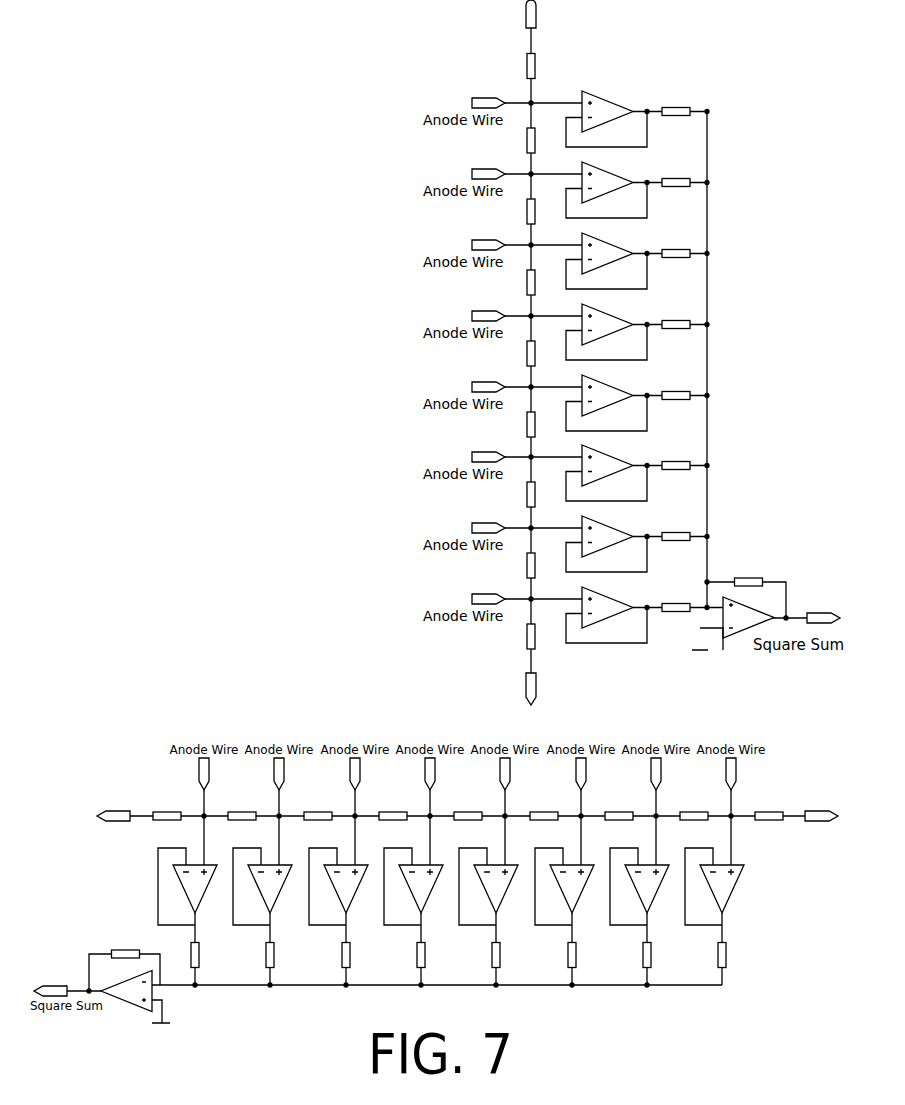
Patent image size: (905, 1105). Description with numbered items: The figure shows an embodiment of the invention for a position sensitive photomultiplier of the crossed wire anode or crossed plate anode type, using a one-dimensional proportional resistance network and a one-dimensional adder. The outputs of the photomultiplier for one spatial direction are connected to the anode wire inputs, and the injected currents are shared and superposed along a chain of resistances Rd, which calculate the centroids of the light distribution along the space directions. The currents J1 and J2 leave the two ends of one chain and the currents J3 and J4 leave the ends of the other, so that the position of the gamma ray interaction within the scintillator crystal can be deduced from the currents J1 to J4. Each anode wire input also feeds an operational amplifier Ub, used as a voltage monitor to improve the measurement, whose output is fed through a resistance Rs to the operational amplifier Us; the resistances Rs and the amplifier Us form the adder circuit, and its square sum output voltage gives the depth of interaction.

The current output J4 is at (539, 14).
The current output J3 is at (517, 689).
The current output J1 is at (113, 827).
The current output J2 is at (821, 827).
The resistance Rd is at (468, 449).
The resistance Rs is at (437, 529).
The operational amplifier Ub is at (451, 508).
The operational amplifier Us is at (437, 804).